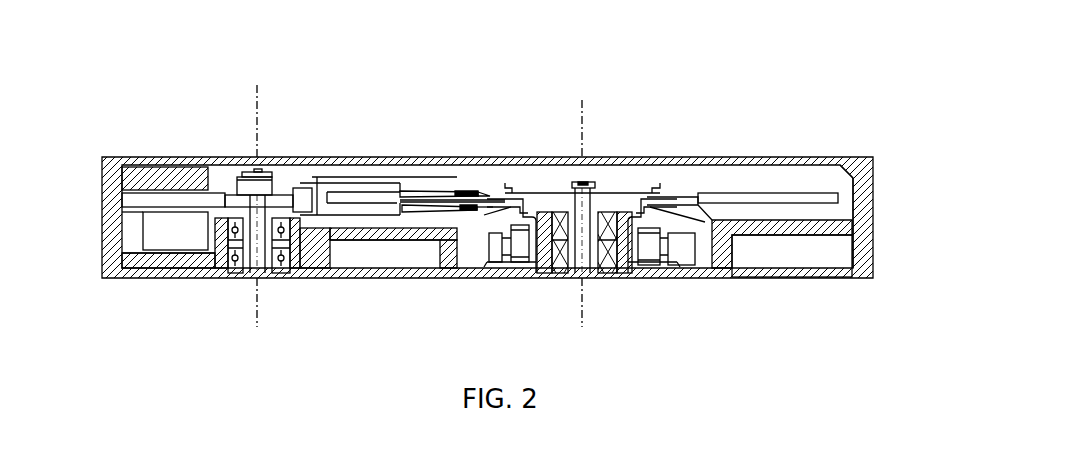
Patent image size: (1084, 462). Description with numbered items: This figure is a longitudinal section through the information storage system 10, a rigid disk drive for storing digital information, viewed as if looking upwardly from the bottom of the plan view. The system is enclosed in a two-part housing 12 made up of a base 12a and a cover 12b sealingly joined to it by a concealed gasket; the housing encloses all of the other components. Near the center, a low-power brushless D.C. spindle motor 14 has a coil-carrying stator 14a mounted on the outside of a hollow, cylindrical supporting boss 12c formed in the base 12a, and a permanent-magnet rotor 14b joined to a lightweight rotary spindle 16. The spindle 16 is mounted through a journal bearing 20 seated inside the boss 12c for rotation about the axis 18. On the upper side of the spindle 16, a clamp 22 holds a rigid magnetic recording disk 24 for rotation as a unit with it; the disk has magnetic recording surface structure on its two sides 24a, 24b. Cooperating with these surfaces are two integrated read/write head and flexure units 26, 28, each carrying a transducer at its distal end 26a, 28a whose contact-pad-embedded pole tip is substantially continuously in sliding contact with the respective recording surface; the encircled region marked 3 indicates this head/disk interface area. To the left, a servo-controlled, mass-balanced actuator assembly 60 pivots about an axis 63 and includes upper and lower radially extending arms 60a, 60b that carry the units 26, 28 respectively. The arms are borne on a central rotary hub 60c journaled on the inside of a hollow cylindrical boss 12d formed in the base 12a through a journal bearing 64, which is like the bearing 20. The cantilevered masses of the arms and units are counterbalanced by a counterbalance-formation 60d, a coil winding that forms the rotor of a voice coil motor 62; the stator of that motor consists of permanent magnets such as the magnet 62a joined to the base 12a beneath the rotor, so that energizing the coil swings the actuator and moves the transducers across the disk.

The FIG. 3 section location 3 is at (504, 186).
The information storage system 10 is at (665, 85).
The two-part housing 12 is at (805, 157).
The base 12a is at (867, 200).
The cover 12b is at (858, 157).
The supporting boss 12c is at (540, 273).
The boss 12d is at (305, 256).
The spindle motor 14 is at (663, 266).
The coil-carrying stator 14a is at (643, 262).
The permanent-magnet rotor 14b is at (680, 190).
The rotary spindle 16 is at (597, 205).
The axis 18 is at (600, 97).
The journal bearing 20 is at (552, 187).
The clamp 22 is at (565, 183).
The rigid magnetic recording disk 24 is at (682, 193).
The recording surface 24a is at (755, 210).
The recording surface 24b is at (750, 208).
The read/write head and flexure unit 26 is at (451, 186).
The distal end 26a is at (477, 201).
The read/write head and flexure unit 28 is at (433, 215).
The distal end 28a is at (467, 241).
The actuator assembly 60 is at (312, 177).
The upper arm 60a is at (342, 190).
The lower arm 60b is at (362, 212).
The rotary hub 60c is at (230, 180).
The counterbalance-formation 60d is at (168, 198).
The voice coil motor 62 is at (173, 255).
The permanent magnet 62a is at (143, 240).
The pivot axis 63 is at (260, 105).
The journal bearing 64 is at (243, 270).